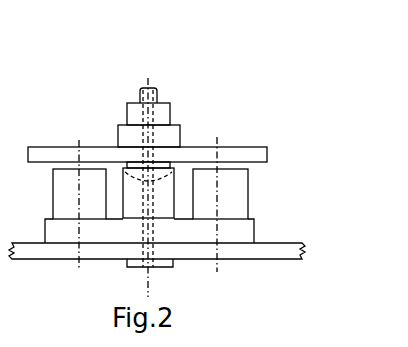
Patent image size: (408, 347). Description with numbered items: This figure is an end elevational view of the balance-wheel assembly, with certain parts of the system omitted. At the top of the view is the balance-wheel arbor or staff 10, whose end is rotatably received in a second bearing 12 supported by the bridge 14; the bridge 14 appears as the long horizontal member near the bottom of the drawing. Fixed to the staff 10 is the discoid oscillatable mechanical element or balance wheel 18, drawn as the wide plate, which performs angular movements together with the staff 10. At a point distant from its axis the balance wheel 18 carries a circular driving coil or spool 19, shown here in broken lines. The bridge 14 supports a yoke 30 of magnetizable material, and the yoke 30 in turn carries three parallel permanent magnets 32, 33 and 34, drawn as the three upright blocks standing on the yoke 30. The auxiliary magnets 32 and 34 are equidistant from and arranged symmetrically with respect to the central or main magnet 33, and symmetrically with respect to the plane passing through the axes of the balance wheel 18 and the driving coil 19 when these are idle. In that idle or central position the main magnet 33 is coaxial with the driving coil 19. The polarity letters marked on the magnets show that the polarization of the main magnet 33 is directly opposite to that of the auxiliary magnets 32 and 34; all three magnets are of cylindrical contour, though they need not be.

The balance-wheel arbor or staff 10 is at (157, 92).
The second bearing 12 is at (158, 265).
The bridge 14 is at (247, 253).
The balance wheel 18 is at (243, 158).
The driving coil 19 is at (173, 158).
The yoke 30 is at (93, 236).
The auxiliary magnet 32 is at (58, 193).
The main magnet 33 is at (171, 210).
The auxiliary magnet 34 is at (236, 198).